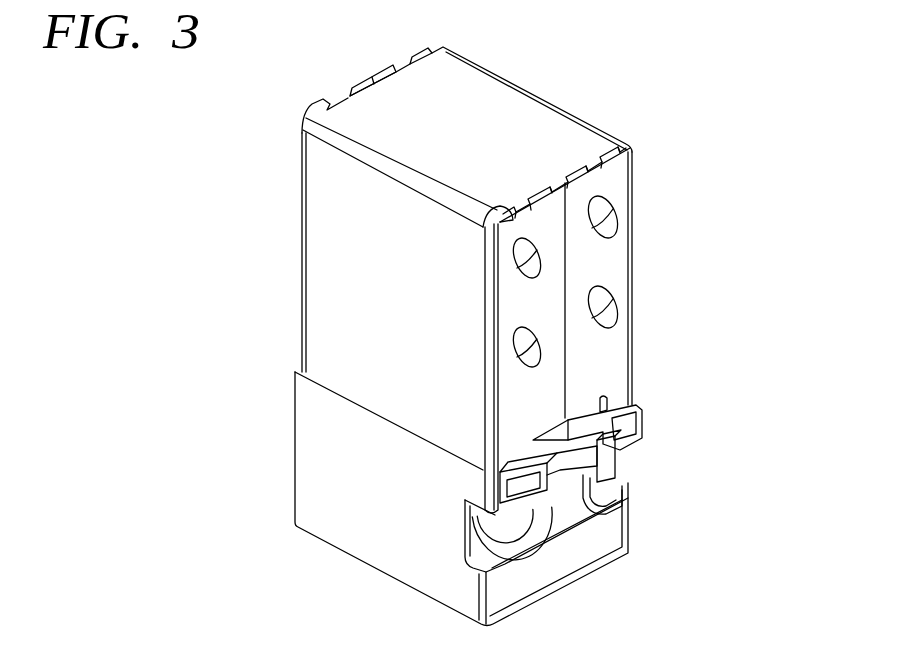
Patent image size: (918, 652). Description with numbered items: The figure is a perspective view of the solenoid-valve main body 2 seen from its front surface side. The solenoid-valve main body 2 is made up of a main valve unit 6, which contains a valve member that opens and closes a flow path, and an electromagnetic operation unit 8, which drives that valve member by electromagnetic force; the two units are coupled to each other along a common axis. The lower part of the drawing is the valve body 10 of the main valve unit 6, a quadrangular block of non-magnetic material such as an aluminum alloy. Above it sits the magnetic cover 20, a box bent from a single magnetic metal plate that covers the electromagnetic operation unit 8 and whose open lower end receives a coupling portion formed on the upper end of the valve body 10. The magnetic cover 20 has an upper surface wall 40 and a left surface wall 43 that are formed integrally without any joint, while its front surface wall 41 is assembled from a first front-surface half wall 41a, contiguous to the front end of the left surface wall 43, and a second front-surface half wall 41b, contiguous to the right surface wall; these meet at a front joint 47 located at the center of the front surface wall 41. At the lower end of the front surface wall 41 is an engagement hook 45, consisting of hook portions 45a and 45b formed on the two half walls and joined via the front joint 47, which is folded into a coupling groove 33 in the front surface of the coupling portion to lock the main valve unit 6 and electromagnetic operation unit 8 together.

The solenoid-valve main body 2 is at (678, 105).
The main valve unit 6 is at (267, 403).
The electromagnetic operation unit 8 is at (597, 117).
The valve body 10 is at (315, 467).
The magnetic cover 20 is at (300, 208).
The coupling groove 33 is at (548, 460).
The upper surface wall 40 is at (517, 130).
The front surface wall 41 is at (724, 210).
The first front-surface half wall 41a is at (547, 280).
The second front-surface half wall 41b is at (605, 342).
The left surface wall 43 is at (340, 272).
The engagement hook 45 is at (750, 400).
The hook portion 45a is at (593, 460).
The hook portion 45b is at (608, 420).
The front joint 47 is at (565, 377).